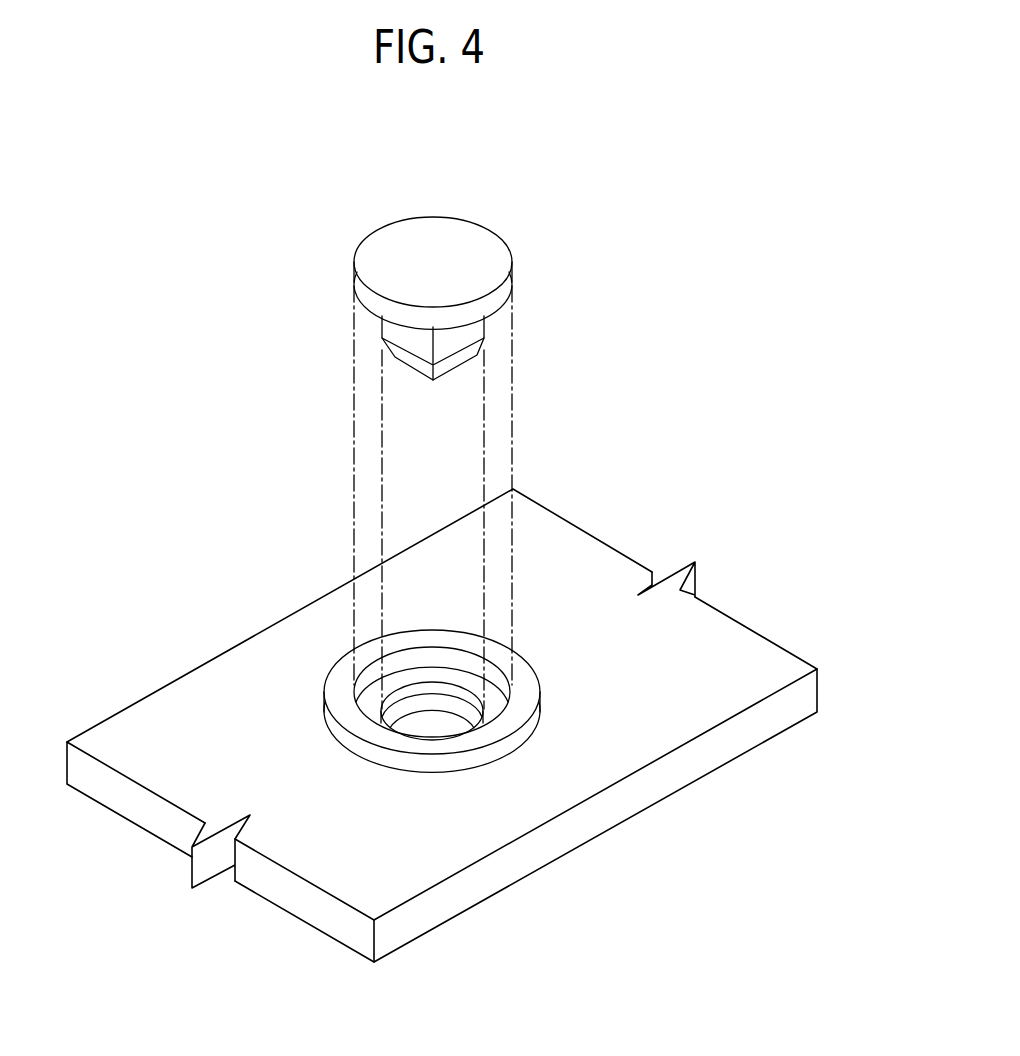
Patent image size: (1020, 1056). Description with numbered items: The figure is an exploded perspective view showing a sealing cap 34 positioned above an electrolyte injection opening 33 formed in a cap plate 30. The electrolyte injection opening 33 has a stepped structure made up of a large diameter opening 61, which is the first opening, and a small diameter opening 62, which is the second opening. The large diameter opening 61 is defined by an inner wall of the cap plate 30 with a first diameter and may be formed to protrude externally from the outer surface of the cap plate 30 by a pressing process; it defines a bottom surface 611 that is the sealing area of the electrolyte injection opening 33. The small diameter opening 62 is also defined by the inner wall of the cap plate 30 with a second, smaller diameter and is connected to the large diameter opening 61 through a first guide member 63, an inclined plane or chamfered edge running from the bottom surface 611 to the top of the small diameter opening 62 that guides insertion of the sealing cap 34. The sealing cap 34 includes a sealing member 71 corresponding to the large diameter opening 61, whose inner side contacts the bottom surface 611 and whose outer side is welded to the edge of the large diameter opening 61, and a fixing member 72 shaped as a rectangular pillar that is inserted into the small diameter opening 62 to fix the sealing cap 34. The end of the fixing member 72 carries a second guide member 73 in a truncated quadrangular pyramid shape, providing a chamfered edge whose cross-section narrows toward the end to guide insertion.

The cap plate 30 is at (480, 882).
The electrolyte injection opening 33 is at (317, 662).
The sealing cap 34 is at (441, 425).
The large diameter opening 61 is at (440, 657).
The bottom surface 611 is at (410, 673).
The small diameter opening 62 is at (450, 702).
The first guide member 63 is at (397, 695).
The sealing member 71 is at (377, 303).
The fixing member 72 is at (478, 329).
The second guide member 73 is at (458, 357).